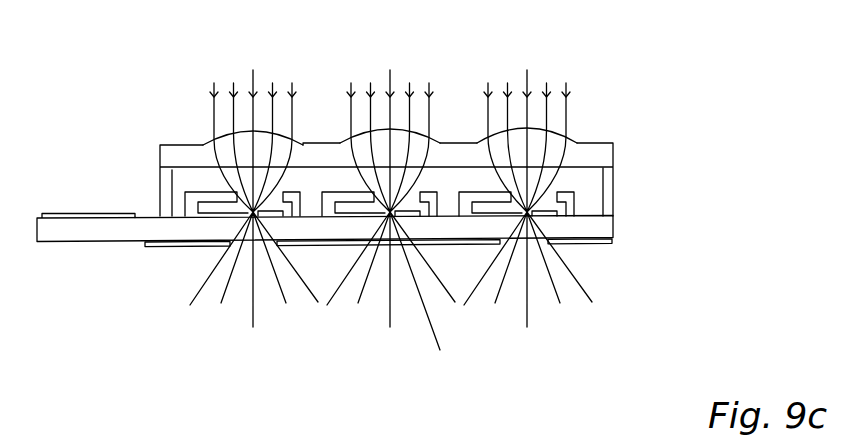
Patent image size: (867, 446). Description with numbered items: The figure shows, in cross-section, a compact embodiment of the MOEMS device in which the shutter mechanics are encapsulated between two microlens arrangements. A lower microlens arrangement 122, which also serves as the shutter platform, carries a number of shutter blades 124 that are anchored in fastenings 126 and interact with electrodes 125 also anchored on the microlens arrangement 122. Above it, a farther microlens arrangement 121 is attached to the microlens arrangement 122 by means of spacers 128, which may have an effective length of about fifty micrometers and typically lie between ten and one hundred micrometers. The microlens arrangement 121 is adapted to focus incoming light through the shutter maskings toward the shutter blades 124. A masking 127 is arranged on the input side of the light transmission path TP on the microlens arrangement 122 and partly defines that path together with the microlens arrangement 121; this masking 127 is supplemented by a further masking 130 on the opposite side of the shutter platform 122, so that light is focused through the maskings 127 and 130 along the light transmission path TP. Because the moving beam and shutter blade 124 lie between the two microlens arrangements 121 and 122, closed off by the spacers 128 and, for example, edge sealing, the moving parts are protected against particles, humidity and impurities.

The microlens arrangement 121 is at (600, 143).
The microlens arrangement 122 is at (615, 228).
The shutter blades 124 is at (498, 160).
The electrodes 125 is at (288, 190).
The fastenings 126 is at (528, 216).
The masking 127 is at (187, 145).
The spacers 128 is at (157, 190).
The masking 130 is at (190, 249).
The light transmission path TP is at (431, 298).